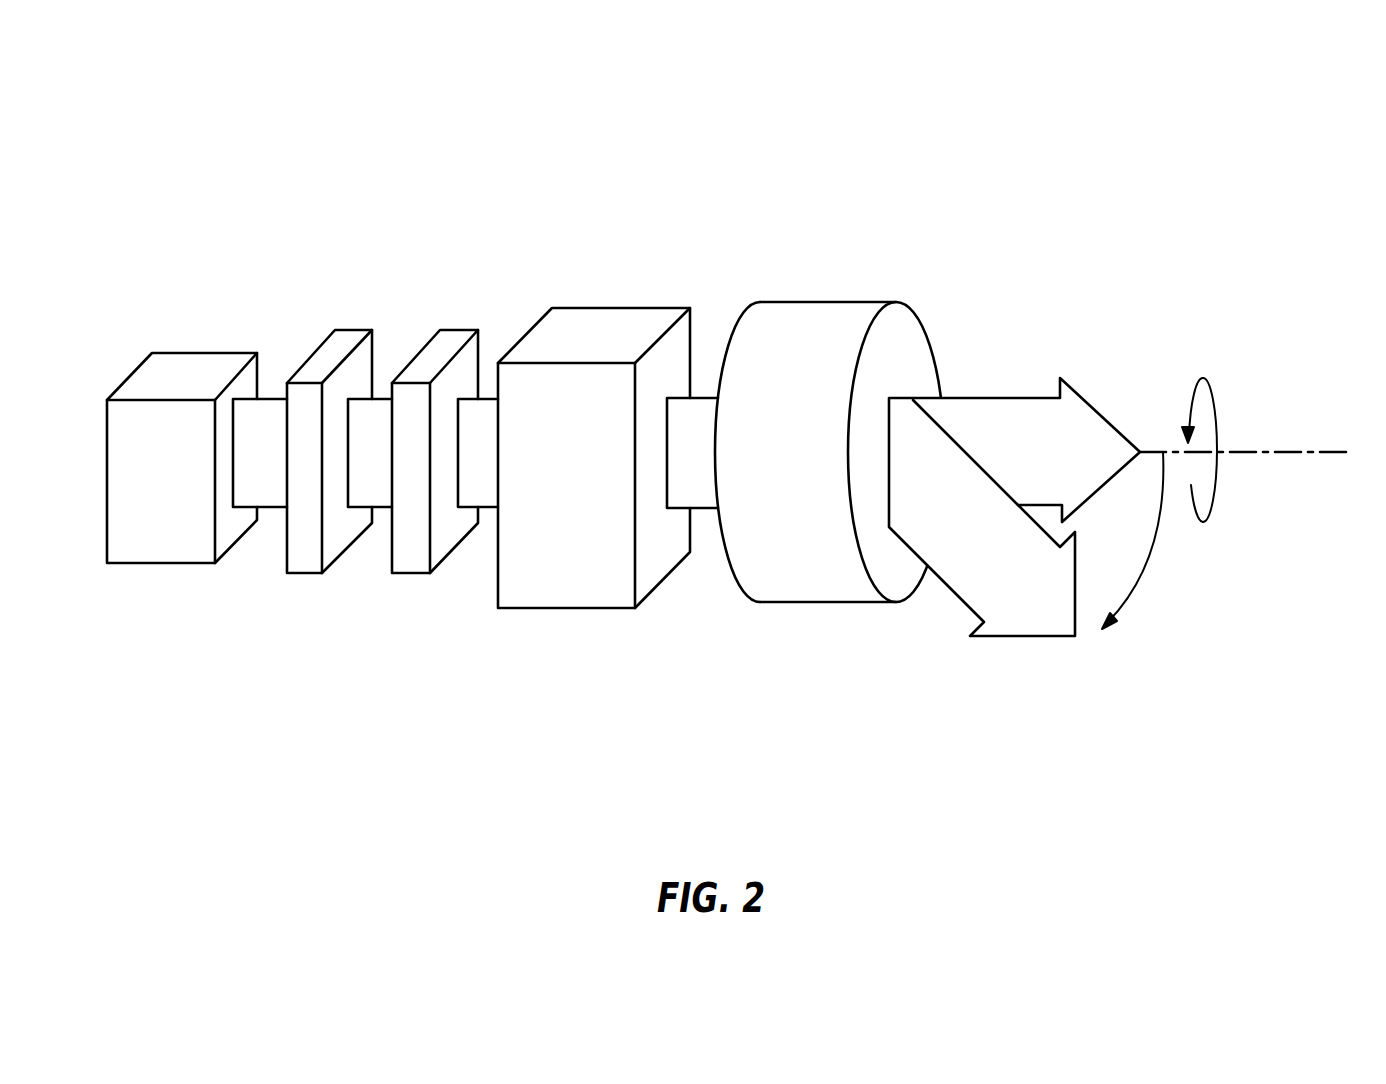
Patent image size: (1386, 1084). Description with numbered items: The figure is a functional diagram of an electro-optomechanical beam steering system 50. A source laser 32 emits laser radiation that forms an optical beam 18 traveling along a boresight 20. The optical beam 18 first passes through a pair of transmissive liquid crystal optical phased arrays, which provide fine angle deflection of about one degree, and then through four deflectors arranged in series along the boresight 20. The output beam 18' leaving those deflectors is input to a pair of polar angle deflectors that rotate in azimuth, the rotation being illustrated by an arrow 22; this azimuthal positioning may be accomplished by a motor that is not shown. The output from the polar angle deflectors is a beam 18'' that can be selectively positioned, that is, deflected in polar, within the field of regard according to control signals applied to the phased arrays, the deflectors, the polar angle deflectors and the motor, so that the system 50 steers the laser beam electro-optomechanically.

The electro-optomechanical beam steering system 50 is at (1052, 138).
The source laser 32 is at (153, 550).
The optical beam 18 is at (365, 504).
The output beam 18' is at (690, 385).
The beam 18'' is at (1014, 556).
The boresight 20 is at (1303, 452).
The arrow 22 is at (1217, 395).